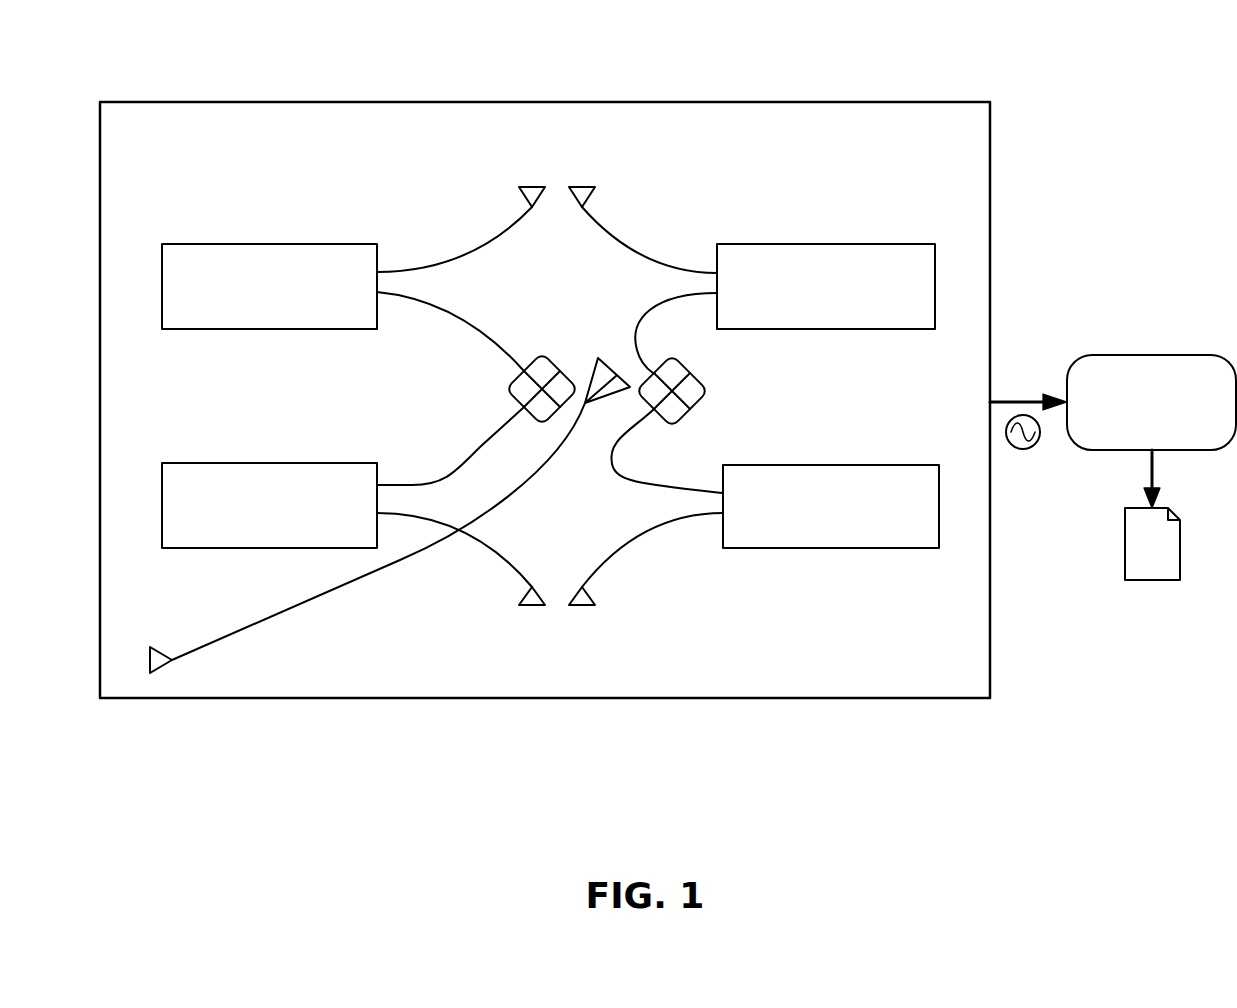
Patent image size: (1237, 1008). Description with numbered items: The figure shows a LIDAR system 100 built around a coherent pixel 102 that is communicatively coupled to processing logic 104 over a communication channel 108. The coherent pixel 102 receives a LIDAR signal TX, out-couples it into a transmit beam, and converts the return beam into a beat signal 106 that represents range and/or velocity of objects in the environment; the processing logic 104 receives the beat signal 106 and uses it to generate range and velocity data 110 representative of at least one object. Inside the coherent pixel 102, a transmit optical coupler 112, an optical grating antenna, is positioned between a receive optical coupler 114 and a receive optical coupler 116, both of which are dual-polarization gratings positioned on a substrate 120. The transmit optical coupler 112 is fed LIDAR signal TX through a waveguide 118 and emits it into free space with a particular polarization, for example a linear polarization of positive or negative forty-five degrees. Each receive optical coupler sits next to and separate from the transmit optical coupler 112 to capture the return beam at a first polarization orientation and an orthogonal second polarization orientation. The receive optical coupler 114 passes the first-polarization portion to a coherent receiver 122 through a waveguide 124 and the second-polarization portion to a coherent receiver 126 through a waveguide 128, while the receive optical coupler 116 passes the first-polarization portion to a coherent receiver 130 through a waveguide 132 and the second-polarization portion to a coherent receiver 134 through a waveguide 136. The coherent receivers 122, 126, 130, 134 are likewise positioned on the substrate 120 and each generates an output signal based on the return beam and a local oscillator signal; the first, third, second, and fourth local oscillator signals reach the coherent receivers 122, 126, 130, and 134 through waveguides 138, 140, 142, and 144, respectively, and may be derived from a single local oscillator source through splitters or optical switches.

The LIDAR system 100 is at (553, 42).
The coherent pixel 102 is at (990, 196).
The processing logic 104 is at (1199, 431).
The beat signal 106 is at (1023, 449).
The communication channel 108 is at (1013, 402).
The range and velocity data 110 is at (1136, 558).
The transmit optical coupler 112 is at (598, 358).
The receive optical coupler 114 is at (506, 389).
The receive optical coupler 116 is at (708, 391).
The waveguide 118 is at (388, 566).
The substrate 120 is at (776, 156).
The coherent receiver 122 is at (338, 315).
The waveguide 124 is at (467, 330).
The coherent receiver 126 is at (338, 534).
The waveguide 128 is at (482, 447).
The coherent receiver 130 is at (895, 315).
The waveguide 132 is at (648, 280).
The coherent receiver 134 is at (900, 535).
The waveguide 136 is at (640, 483).
The waveguide 138 is at (472, 252).
The waveguide 140 is at (488, 553).
The waveguide 142 is at (621, 246).
The waveguide 144 is at (630, 532).